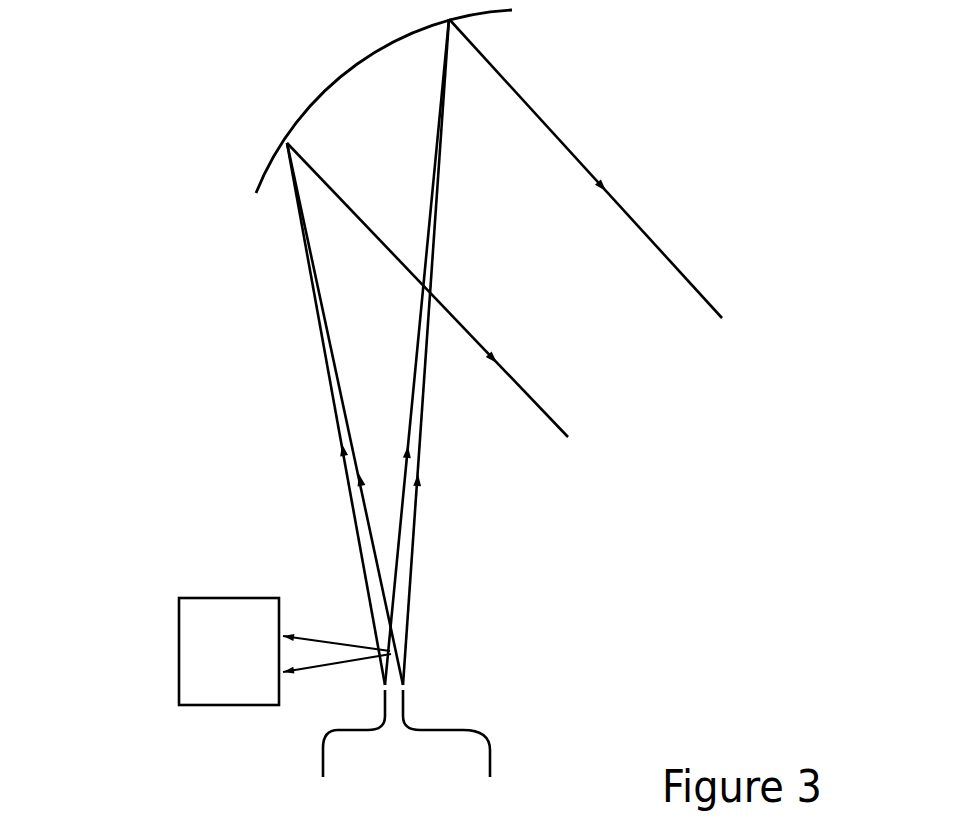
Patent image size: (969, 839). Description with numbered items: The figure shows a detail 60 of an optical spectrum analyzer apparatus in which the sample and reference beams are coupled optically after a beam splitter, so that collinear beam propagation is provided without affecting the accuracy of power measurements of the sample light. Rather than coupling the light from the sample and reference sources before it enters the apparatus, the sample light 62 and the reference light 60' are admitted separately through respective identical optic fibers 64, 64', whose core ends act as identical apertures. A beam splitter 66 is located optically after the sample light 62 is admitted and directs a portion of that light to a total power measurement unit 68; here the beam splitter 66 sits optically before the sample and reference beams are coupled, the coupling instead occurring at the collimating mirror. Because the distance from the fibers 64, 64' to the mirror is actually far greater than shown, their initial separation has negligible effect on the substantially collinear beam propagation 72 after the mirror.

The detail 60 is at (288, 101).
The sample light 62 is at (315, 306).
The return light beam 60' is at (433, 352).
The collinear beam propagation 72 is at (643, 230).
The optic fiber 64 is at (330, 744).
The optic fiber 64' is at (465, 730).
The beam splitter 66 is at (358, 630).
The total power measurement unit 68 is at (250, 667).